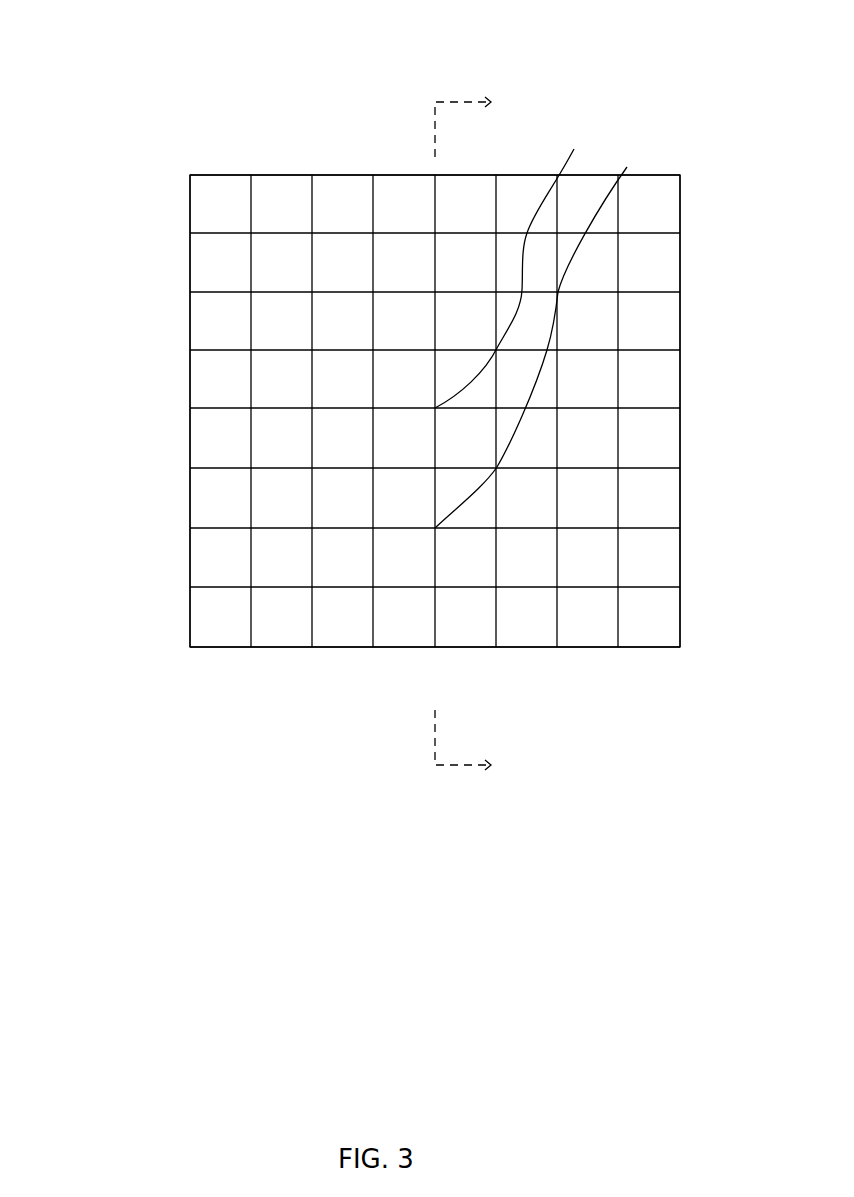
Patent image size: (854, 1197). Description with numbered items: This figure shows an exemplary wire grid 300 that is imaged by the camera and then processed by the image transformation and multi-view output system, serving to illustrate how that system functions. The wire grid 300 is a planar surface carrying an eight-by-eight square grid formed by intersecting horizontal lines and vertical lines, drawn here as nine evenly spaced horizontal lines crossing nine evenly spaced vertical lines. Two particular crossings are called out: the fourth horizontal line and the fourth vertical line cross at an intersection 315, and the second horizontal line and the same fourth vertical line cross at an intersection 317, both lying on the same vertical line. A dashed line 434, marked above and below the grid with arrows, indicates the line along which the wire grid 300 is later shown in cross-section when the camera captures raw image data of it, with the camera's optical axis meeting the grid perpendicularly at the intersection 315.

The wire grid 300 is at (150, 55).
The intersection 315 is at (512, 265).
The intersection 317 is at (550, 334).
The line 434 is at (463, 432).